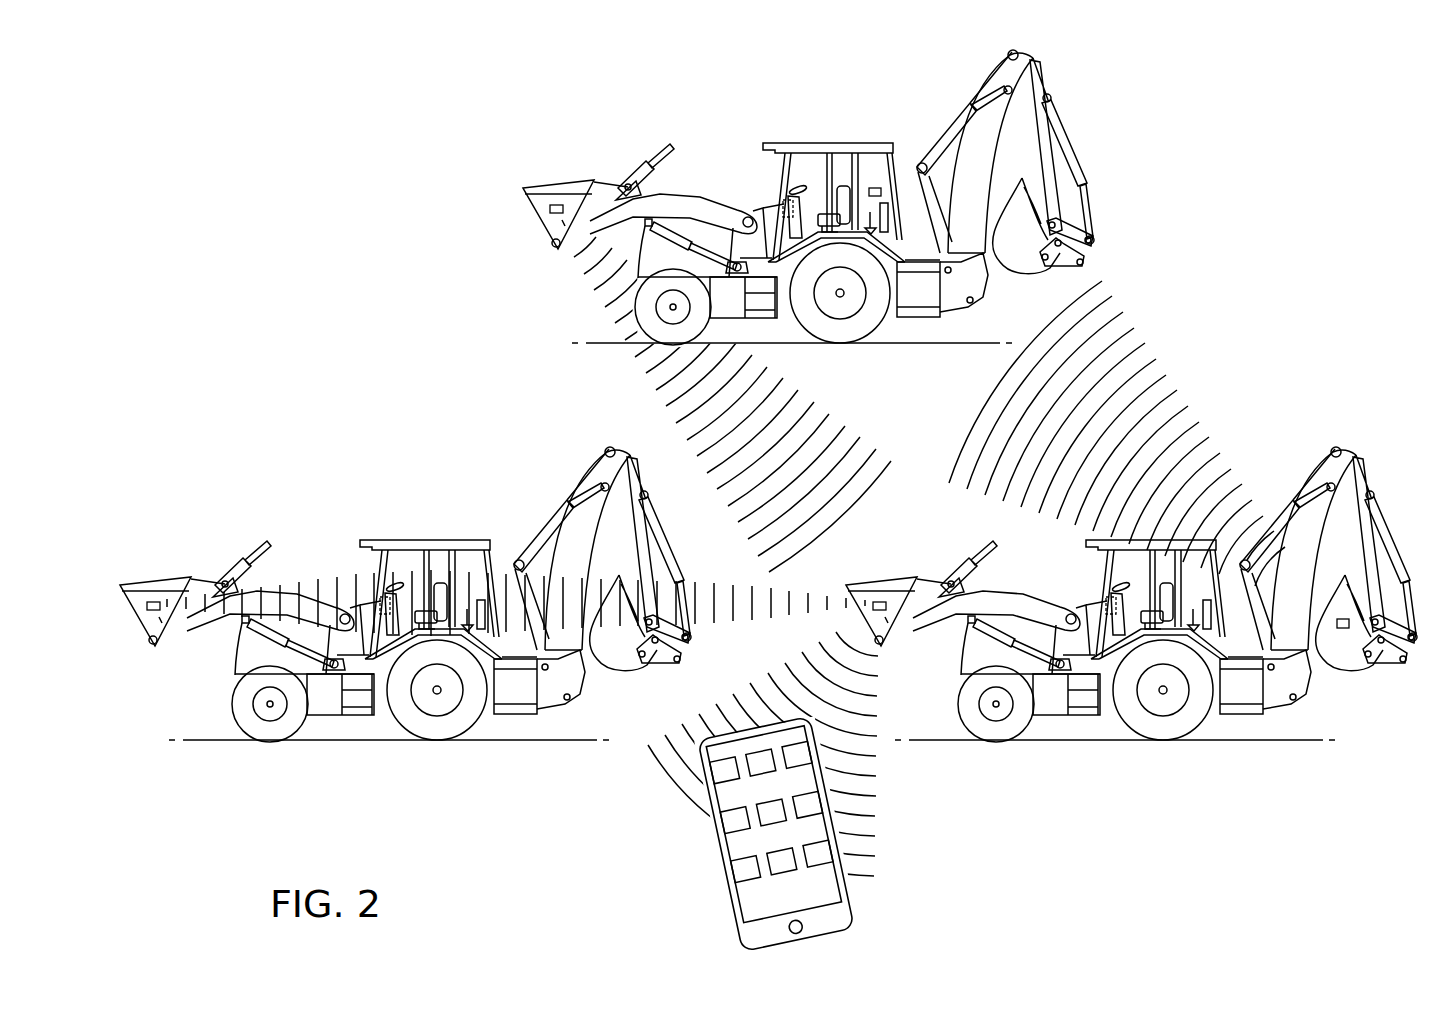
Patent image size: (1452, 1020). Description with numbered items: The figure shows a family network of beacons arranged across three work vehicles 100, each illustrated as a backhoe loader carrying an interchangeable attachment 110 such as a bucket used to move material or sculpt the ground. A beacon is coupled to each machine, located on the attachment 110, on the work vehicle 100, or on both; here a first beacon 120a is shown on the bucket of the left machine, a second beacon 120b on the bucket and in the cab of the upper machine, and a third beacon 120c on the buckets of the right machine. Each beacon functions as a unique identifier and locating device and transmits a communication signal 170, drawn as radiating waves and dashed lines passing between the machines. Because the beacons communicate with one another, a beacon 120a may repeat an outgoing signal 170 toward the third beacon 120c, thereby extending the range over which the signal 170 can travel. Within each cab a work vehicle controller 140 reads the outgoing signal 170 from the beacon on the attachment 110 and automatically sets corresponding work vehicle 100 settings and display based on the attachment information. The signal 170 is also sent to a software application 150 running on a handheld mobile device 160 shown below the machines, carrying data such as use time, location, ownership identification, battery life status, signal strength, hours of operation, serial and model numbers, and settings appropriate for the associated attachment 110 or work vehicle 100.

The work vehicle 100 is at (716, 95).
The attachment 110 is at (545, 217).
The beacon 120a is at (149, 607).
The beacon 120b is at (553, 205).
The beacon 120c is at (882, 597).
The work vehicle controller 140 is at (783, 195).
The software application 150 is at (742, 818).
The mobile device 160 is at (718, 895).
The communication signal 170 is at (1117, 337).